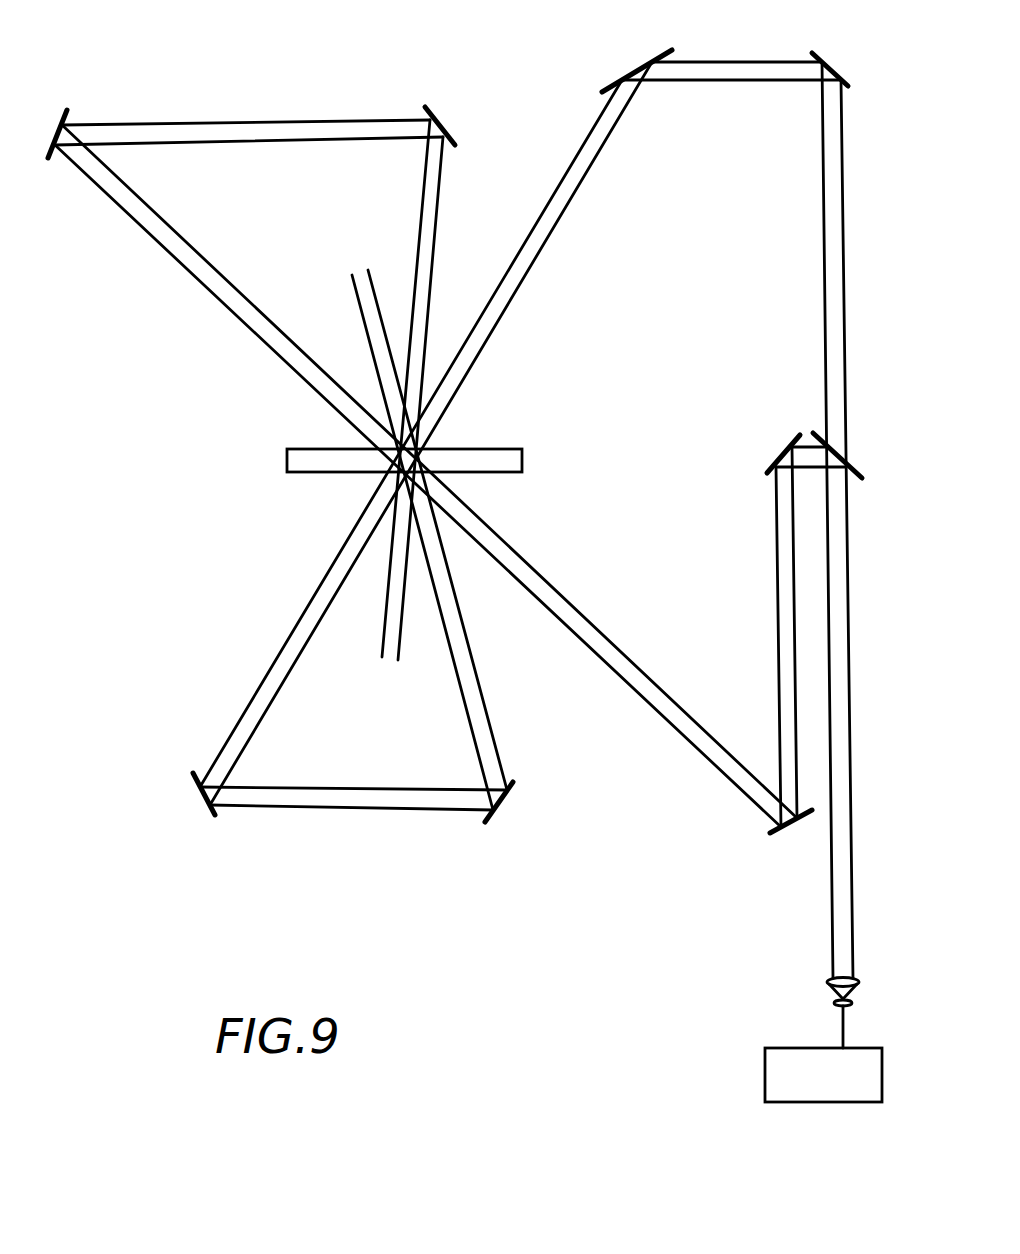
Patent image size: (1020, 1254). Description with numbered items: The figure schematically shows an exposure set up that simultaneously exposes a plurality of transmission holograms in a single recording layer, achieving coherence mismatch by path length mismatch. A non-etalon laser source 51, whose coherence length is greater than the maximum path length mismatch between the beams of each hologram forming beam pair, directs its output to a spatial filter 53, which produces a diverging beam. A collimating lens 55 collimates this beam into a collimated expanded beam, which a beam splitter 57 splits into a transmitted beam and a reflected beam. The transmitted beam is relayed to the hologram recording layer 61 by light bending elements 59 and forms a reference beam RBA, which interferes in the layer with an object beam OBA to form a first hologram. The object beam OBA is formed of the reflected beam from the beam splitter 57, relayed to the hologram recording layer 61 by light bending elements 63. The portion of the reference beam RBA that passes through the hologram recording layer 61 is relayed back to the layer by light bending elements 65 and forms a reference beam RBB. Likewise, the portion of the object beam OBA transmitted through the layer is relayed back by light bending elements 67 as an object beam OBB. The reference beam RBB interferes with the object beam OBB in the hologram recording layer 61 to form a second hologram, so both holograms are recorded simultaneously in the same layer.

The non-etalon laser source 51 is at (765, 1077).
The spatial filter 53 is at (834, 1004).
The collimating lens 55 is at (830, 982).
The beam splitter 57 is at (866, 476).
The light bending elements 59 is at (660, 52).
The hologram recording layer 61 is at (524, 460).
The light bending elements 63 is at (772, 466).
The light bending elements 65 is at (206, 807).
The light bending elements 67 is at (63, 111).
The object beam OBA is at (628, 658).
The object beam OBB is at (437, 258).
The reference beam RBA is at (498, 327).
The reference beam RBB is at (477, 685).